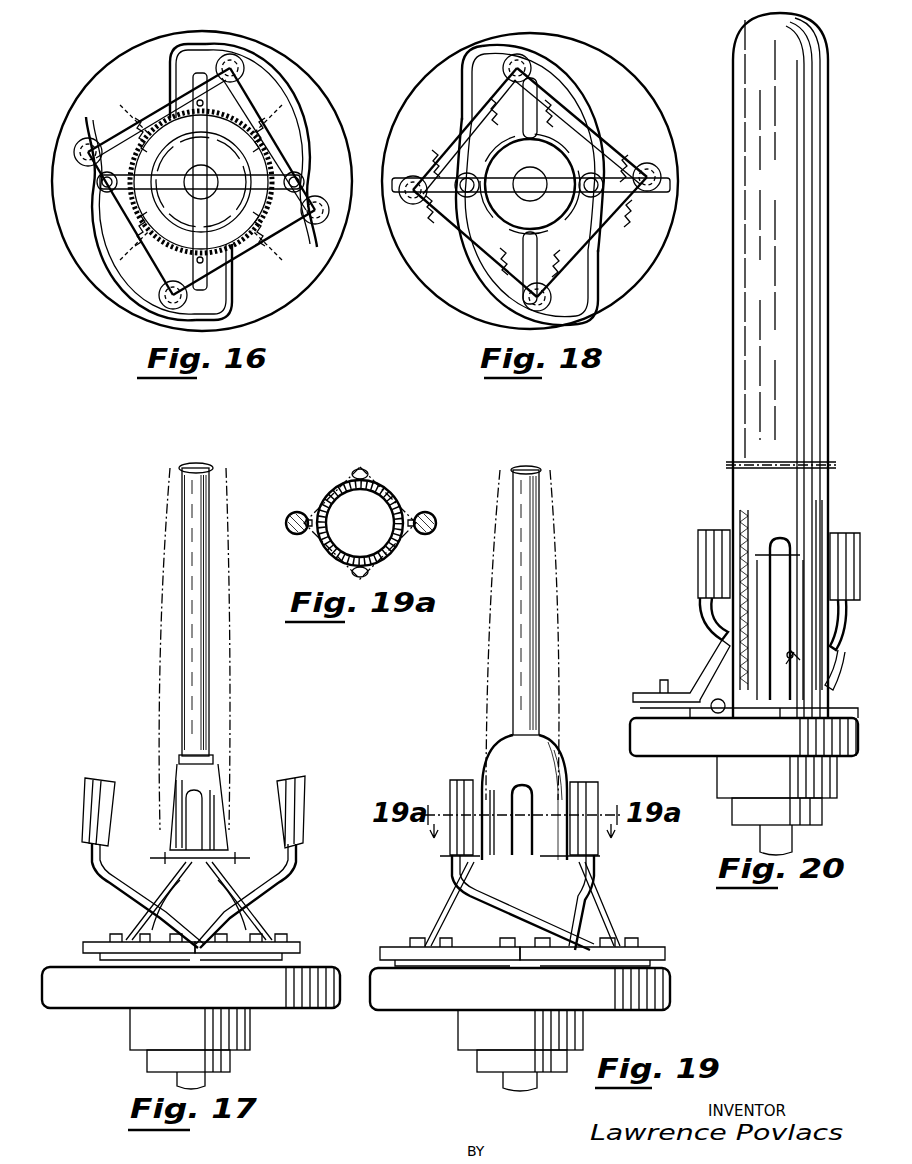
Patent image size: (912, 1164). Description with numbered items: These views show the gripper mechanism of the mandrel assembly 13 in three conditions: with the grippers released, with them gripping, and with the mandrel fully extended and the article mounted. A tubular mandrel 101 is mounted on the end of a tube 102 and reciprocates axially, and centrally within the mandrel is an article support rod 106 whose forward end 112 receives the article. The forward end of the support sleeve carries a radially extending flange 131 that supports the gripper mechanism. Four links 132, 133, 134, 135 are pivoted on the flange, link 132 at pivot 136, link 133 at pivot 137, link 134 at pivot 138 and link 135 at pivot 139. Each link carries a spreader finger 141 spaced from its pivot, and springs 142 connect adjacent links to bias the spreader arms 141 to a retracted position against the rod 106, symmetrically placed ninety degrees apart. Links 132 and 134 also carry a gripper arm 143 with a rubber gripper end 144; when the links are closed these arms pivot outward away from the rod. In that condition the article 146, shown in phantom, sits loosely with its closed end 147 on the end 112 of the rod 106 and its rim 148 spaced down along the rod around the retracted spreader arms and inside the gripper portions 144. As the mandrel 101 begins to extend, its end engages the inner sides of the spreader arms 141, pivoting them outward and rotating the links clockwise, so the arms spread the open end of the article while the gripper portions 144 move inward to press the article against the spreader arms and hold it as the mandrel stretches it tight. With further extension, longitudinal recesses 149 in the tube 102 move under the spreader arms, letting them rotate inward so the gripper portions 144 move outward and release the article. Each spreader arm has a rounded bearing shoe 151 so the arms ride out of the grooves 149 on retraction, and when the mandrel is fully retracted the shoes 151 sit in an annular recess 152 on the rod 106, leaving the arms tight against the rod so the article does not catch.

In FIG. 17, the mandrel assembly 13 is at (298, 930).
In FIG. 18, the tubular mandrel 101 is at (530, 176).
In FIG. 20, the tubular mandrel 101 is at (732, 468).
In FIG. 17, the tubular mandrel 101 is at (238, 936).
In FIG. 19, the tubular mandrel 101 is at (498, 748).
In FIG. 19A, the tubular mandrel 101 is at (392, 502).
In FIG. 20, the tube 102 is at (763, 727).
In FIG. 17, the article support rod 106 is at (205, 702).
In FIG. 16, the end of the article support rod 112 is at (201, 182).
In FIG. 18, the end of the article support rod 112 is at (528, 194).
In FIG. 17, the end of the article support rod 112 is at (180, 463).
In FIG. 19, the end of the article support rod 112 is at (527, 468).
In FIG. 16, the flange 131 is at (305, 278).
In FIG. 18, the flange 131 is at (632, 280).
In FIG. 20, the flange 131 is at (632, 726).
In FIG. 17, the flange 131 is at (312, 1010).
In FIG. 19, the flange 131 is at (668, 990).
In FIG. 16, the link 132 is at (170, 108).
In FIG. 18, the link 132 is at (470, 100).
In FIG. 16, the link 133 is at (128, 222).
In FIG. 18, the link 133 is at (485, 282).
In FIG. 17, the link 133 is at (139, 964).
In FIG. 19, the link 133 is at (450, 967).
In FIG. 16, the link 134 is at (245, 200).
In FIG. 18, the link 134 is at (628, 238).
In FIG. 17, the link 134 is at (247, 964).
In FIG. 19, the link 134 is at (592, 967).
In FIG. 16, the link 135 is at (320, 170).
In FIG. 18, the link 135 is at (620, 122).
In FIG. 16, the pivot 136 is at (238, 76).
In FIG. 16, the pivot 137 is at (82, 140).
In FIG. 16, the pivot 138 is at (160, 300).
In FIG. 16, the pivot 139 is at (322, 222).
In FIG. 16, the spreader finger 141 is at (172, 176).
In FIG. 18, the spreader finger 141 is at (531, 191).
In FIG. 20, the spreader finger 141 is at (735, 530).
In FIG. 17, the spreader finger 141 is at (160, 882).
In FIG. 19, the spreader finger 141 is at (508, 810).
In FIG. 19A, the spreader finger 141 is at (300, 556).
In FIG. 16, the spring 142 is at (272, 132).
In FIG. 18, the spring 142 is at (540, 108).
In FIG. 17, the spring 142 is at (128, 928).
In FIG. 19, the spring 142 is at (452, 932).
In FIG. 16, the gripper arm 143 is at (248, 122).
In FIG. 18, the gripper arm 143 is at (565, 138).
In FIG. 17, the gripper arm 143 is at (106, 886).
In FIG. 19, the gripper arm 143 is at (560, 918).
In FIG. 16, the rubber gripper end 144 is at (96, 186).
In FIG. 18, the rubber gripper end 144 is at (655, 182).
In FIG. 20, the rubber gripper end 144 is at (700, 556).
In FIG. 17, the rubber gripper end 144 is at (88, 792).
In FIG. 19, the rubber gripper end 144 is at (452, 792).
In FIG. 19A, the rubber gripper end 144 is at (296, 512).
In FIG. 20, the article 146 is at (730, 445).
In FIG. 17, the article 146 is at (158, 618).
In FIG. 19, the article 146 is at (560, 632).
In FIG. 19A, the article 146 is at (348, 470).
In FIG. 20, the closed end 147 is at (770, 15).
In FIG. 17, the closed end 147 is at (207, 463).
In FIG. 20, the rim 148 is at (806, 462).
In FIG. 17, the rim 148 is at (222, 856).
In FIG. 19, the rim 148 is at (462, 880).
In FIG. 20, the longitudinal recesses 149 is at (700, 660).
In FIG. 20, the bearing shoe 151 is at (718, 646).
In FIG. 17, the bearing shoe 151 is at (175, 846).
In FIG. 17, the annular recess 152 is at (215, 846).